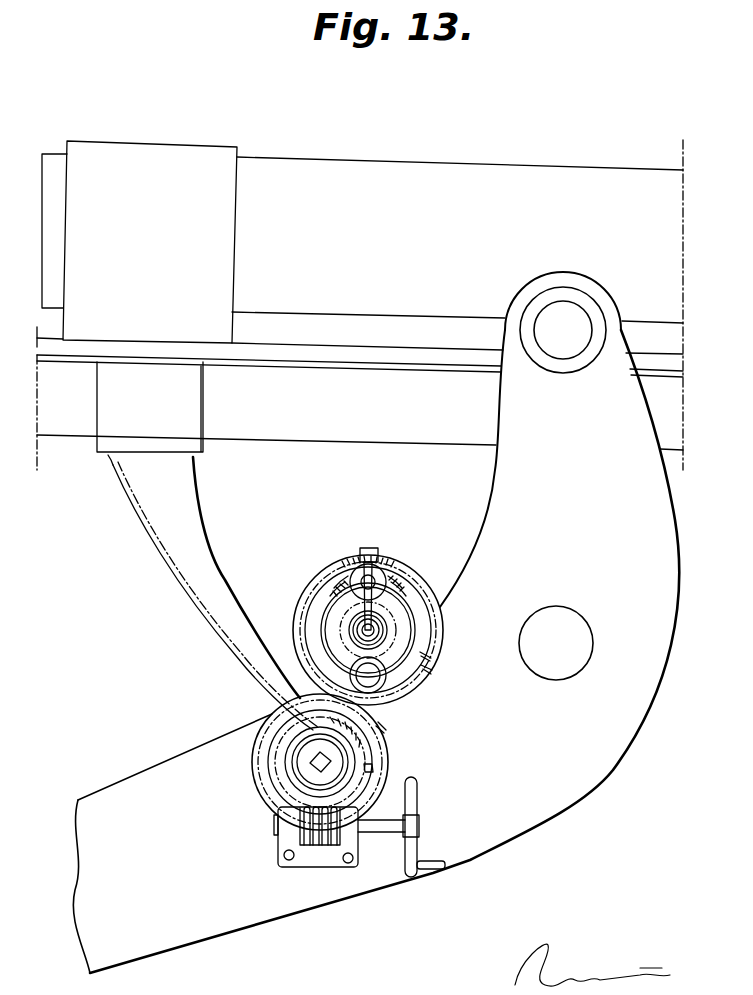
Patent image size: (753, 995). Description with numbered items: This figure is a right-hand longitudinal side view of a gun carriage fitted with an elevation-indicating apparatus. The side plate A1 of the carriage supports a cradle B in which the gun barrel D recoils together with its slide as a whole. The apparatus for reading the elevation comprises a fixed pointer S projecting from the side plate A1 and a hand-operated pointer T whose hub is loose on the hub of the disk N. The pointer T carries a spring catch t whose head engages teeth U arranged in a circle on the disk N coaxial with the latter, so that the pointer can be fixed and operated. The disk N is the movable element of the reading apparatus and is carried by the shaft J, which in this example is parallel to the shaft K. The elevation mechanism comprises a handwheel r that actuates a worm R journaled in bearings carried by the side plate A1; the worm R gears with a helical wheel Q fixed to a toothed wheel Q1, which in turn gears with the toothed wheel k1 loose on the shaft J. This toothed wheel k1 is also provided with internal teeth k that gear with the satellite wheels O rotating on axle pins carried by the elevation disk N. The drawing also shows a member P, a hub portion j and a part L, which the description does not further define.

The gun barrel D is at (474, 173).
The cradle B is at (460, 437).
The side plate A1 is at (520, 813).
The curved arm P is at (238, 660).
The shaft J is at (383, 633).
The disk N is at (383, 567).
The teeth U is at (328, 610).
The pointer T is at (390, 585).
The hub j is at (360, 629).
The fixed pointer S is at (370, 552).
The spring catch t is at (363, 573).
The satellite wheels O is at (350, 576).
The internal teeth k is at (426, 656).
The toothed wheel k1 is at (428, 668).
The toothed wheel Q1 is at (376, 727).
The helical wheel Q is at (370, 770).
The shaft K is at (318, 764).
The hub of ratchet wheel L is at (297, 760).
The worm R is at (317, 840).
The handwheel r is at (410, 853).